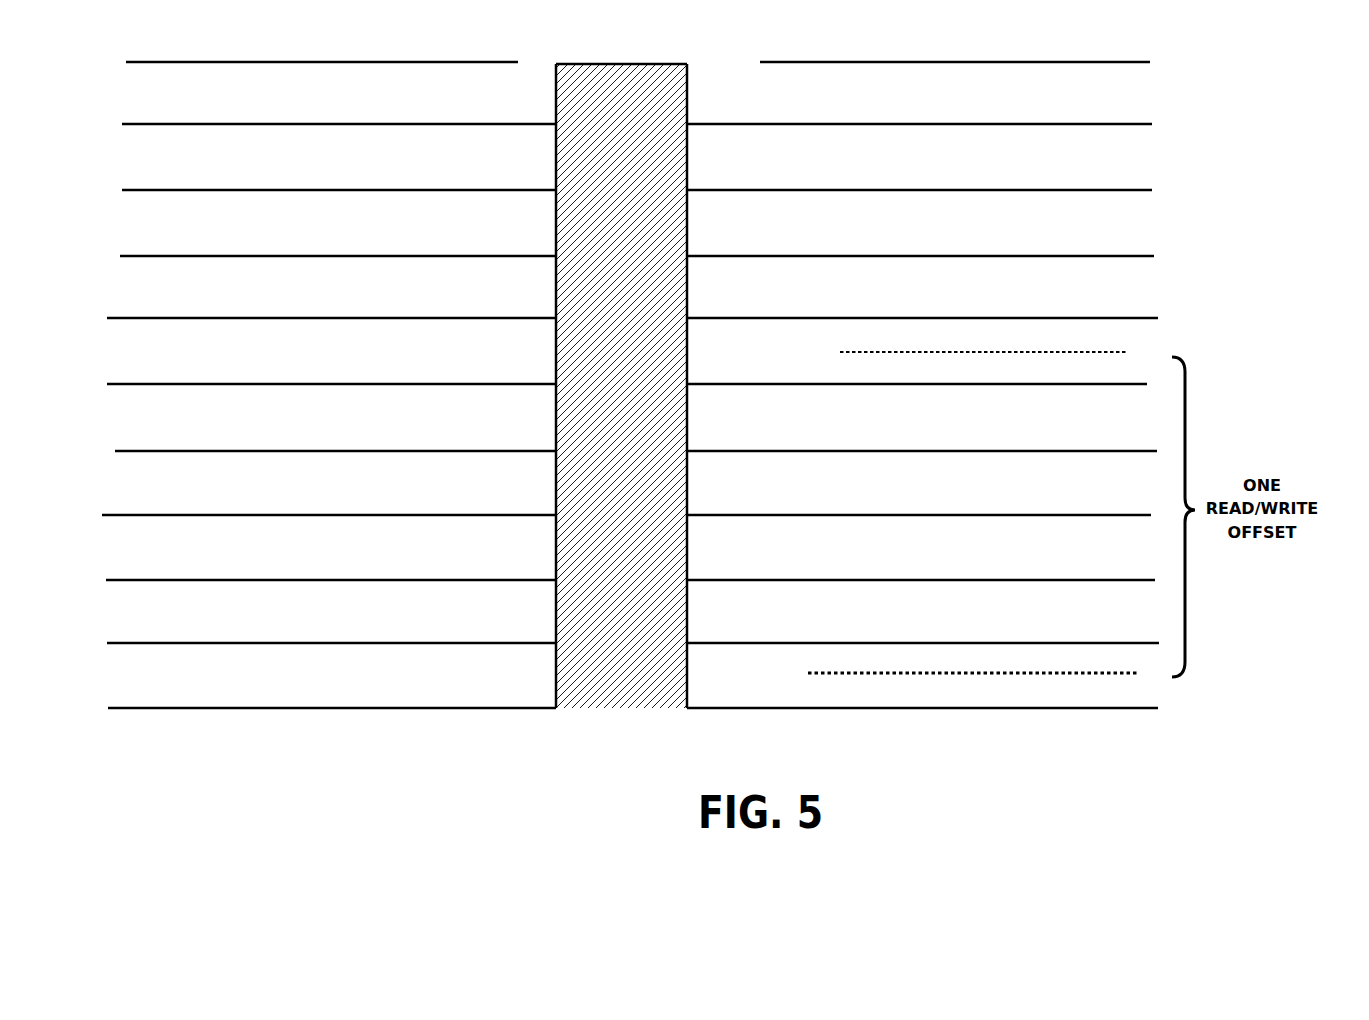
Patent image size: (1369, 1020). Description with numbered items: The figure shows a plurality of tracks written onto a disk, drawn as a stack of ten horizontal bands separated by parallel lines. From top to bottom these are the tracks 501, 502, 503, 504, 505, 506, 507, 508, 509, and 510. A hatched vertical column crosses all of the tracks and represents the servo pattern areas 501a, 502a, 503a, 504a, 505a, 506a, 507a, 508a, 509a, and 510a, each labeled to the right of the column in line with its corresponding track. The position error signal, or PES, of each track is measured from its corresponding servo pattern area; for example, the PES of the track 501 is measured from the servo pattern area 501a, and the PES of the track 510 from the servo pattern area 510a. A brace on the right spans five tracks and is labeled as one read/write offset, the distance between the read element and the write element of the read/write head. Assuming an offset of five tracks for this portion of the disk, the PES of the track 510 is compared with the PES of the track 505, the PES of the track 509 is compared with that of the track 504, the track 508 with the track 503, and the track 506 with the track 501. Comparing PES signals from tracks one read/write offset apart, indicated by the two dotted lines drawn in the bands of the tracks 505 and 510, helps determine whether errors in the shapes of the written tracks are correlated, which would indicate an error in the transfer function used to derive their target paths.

The track 501 is at (152, 103).
The track 502 is at (152, 167).
The track 503 is at (152, 233).
The track 504 is at (152, 297).
The track 505 is at (152, 361).
The track 506 is at (152, 427).
The track 507 is at (152, 493).
The track 508 is at (152, 557).
The track 509 is at (152, 621).
The track 510 is at (152, 685).
The servo pattern area 501a is at (756, 103).
The servo pattern area 502a is at (756, 167).
The servo pattern area 503a is at (756, 233).
The servo pattern area 504a is at (756, 297).
The servo pattern area 505a is at (756, 361).
The servo pattern area 506a is at (756, 427).
The servo pattern area 507a is at (756, 493).
The servo pattern area 508a is at (756, 557).
The servo pattern area 509a is at (756, 621).
The servo pattern area 510a is at (756, 685).